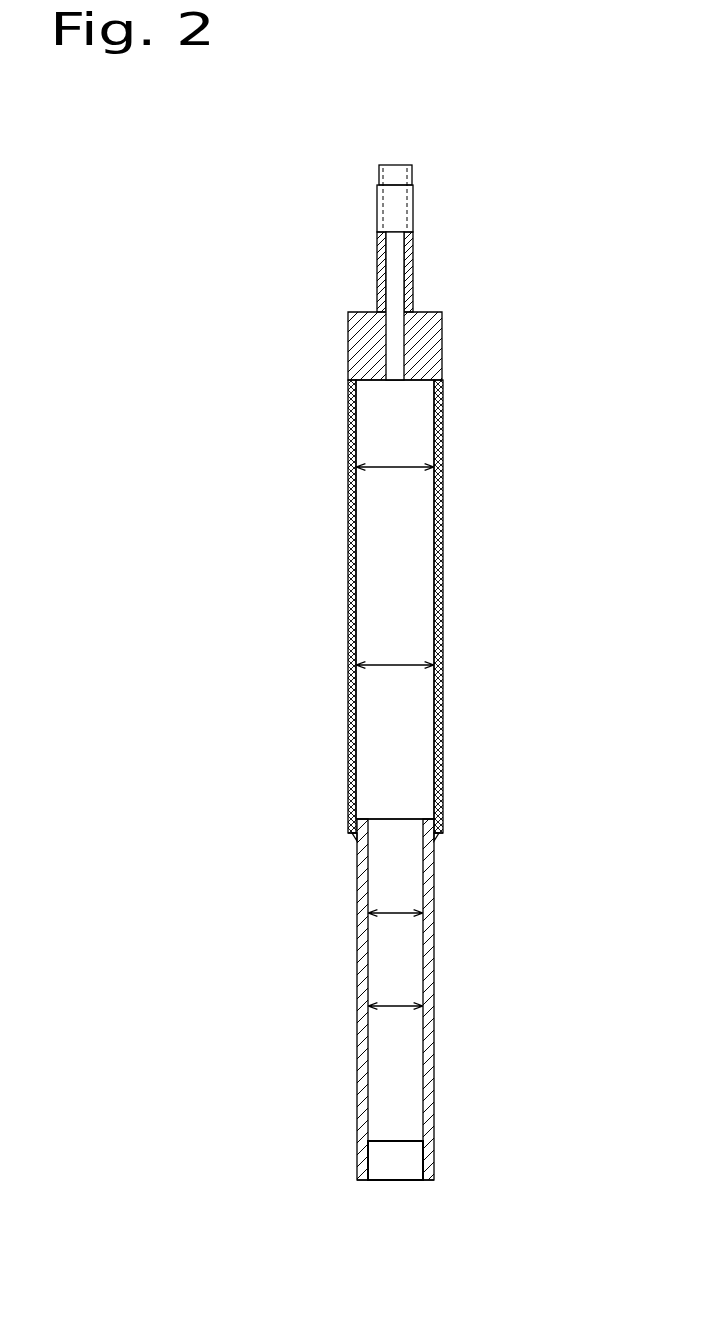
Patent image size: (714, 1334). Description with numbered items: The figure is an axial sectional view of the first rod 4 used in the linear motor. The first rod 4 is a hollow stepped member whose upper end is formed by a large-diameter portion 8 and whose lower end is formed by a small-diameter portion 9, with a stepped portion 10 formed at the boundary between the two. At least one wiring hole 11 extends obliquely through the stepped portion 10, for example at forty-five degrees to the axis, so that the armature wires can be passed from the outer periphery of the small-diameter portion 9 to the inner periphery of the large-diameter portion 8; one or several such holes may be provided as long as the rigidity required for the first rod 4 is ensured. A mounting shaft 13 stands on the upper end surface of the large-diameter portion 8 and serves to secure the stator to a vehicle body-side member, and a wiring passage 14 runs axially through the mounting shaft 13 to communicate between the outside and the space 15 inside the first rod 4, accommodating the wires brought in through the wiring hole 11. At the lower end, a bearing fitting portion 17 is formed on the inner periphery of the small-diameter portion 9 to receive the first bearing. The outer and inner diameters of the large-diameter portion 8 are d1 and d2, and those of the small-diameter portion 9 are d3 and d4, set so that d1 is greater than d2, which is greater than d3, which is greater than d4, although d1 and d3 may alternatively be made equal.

The first rod 4 is at (266, 205).
The large-diameter portion 8 is at (480, 595).
The small-diameter portion 9 is at (469, 1065).
The stepped portion 10 is at (470, 846).
The wiring hole 11 is at (350, 824).
The mounting shaft 13 is at (413, 240).
The wiring passage 14 is at (404, 275).
The space 15 is at (411, 443).
The bearing fitting portion 17 is at (422, 1165).
The outer diameter of the large-diameter portion d1 is at (392, 470).
The inner diameter of the large-diameter portion d2 is at (392, 668).
The outer diameter of the small-diameter portion d3 is at (393, 913).
The inner diameter of the small-diameter portion d4 is at (394, 1006).